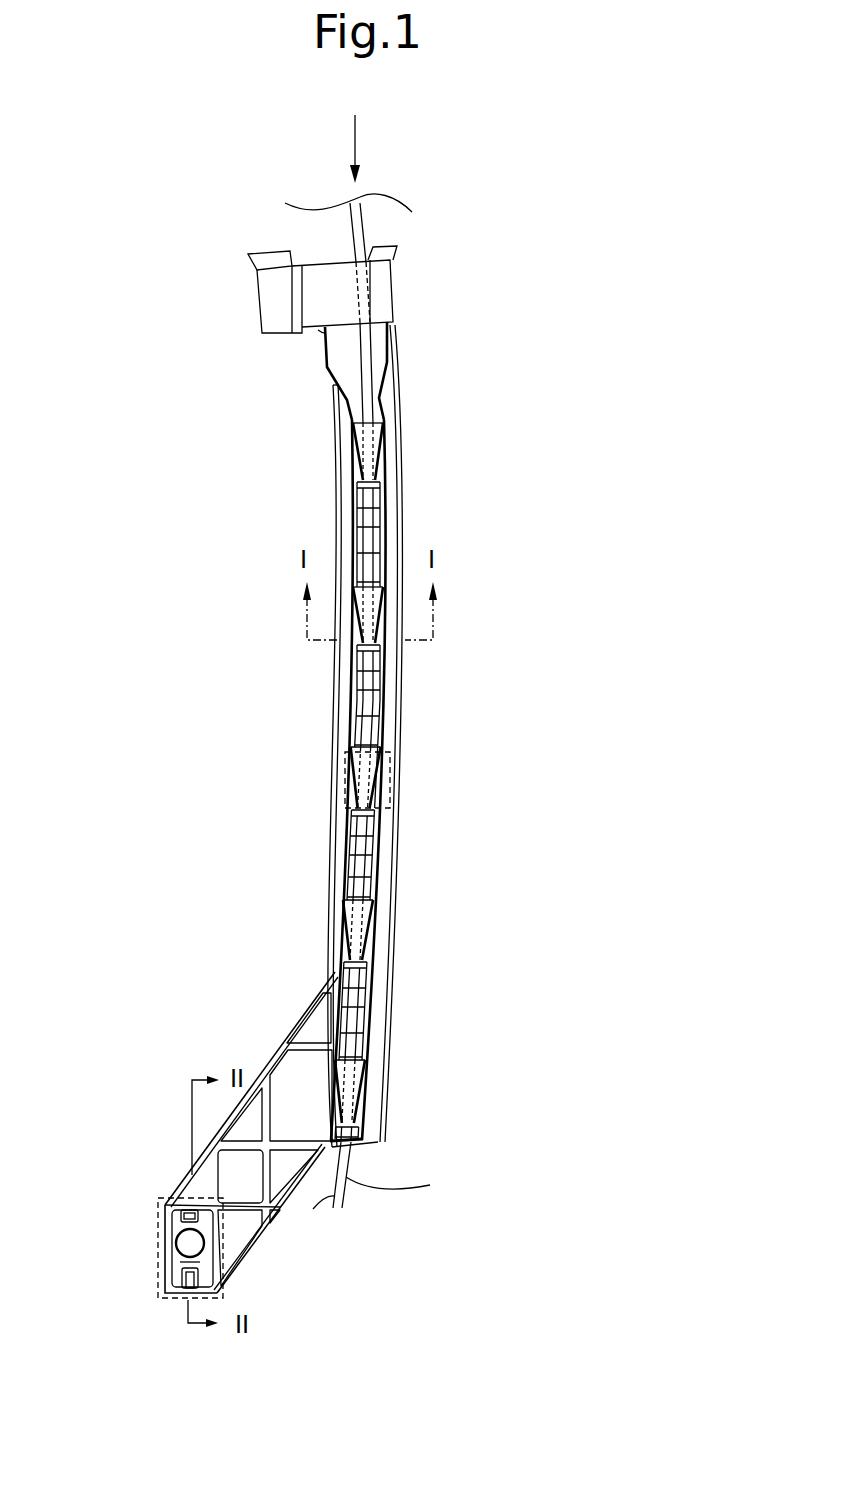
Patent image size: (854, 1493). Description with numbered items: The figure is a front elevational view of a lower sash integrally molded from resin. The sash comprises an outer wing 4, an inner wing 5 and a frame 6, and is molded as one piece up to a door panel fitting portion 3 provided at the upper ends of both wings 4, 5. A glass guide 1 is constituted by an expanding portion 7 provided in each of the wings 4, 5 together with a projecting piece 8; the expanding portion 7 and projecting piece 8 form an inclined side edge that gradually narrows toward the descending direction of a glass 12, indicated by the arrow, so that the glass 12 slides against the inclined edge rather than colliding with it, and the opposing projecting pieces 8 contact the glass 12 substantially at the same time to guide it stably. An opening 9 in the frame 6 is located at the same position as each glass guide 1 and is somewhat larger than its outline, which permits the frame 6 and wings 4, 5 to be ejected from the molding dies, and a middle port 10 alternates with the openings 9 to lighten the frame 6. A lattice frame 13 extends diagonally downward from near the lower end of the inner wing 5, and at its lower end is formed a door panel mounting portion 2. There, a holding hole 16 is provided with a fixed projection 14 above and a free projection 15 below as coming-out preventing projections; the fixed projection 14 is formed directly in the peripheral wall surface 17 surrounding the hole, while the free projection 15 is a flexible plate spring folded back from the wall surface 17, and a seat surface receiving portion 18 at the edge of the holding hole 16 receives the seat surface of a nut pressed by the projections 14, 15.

The glass guide 1 is at (401, 765).
The door panel mounting portion 2 is at (144, 1205).
The door panel fitting portion 3 is at (398, 289).
The outer wing 4 is at (386, 516).
The inner wing 5 is at (352, 506).
The frame 6 is at (392, 434).
The expanding portion 7 is at (387, 790).
The projecting piece 8 is at (352, 798).
The opening 9 is at (357, 748).
The middle port 10 is at (352, 862).
The glass 12 is at (348, 1190).
The lattice frame 13 is at (250, 1227).
The fixed projection 14 is at (187, 1208).
The free projection 15 is at (180, 1288).
The holding hole 16 is at (190, 1242).
The peripheral wall surface 17 is at (188, 1273).
The seat surface receiving portion 18 is at (190, 1262).